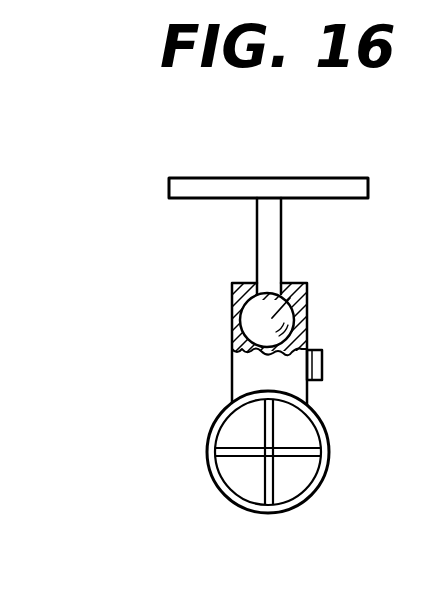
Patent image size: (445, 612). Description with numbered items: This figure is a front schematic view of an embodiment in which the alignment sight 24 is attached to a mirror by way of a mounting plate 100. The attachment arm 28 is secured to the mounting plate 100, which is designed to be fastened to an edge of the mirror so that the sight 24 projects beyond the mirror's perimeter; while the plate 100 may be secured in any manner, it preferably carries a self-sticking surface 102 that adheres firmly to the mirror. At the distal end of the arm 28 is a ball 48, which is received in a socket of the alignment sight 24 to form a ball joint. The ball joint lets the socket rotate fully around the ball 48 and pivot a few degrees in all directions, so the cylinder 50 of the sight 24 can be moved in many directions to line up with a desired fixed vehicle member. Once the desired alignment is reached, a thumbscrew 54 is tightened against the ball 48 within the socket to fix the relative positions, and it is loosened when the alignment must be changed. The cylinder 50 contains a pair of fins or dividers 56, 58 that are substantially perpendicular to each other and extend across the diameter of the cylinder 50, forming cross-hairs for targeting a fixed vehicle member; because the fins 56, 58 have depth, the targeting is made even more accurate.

The mounting plate 100 is at (273, 156).
The self-sticking surface 102 is at (206, 178).
The attachment arm 28 is at (267, 239).
The ball 48 is at (305, 285).
The thumbscrew 54 is at (326, 352).
The alignment sight 24 is at (256, 459).
The cylinder 50 is at (324, 430).
The fin 56 is at (262, 483).
The fin 58 is at (293, 461).